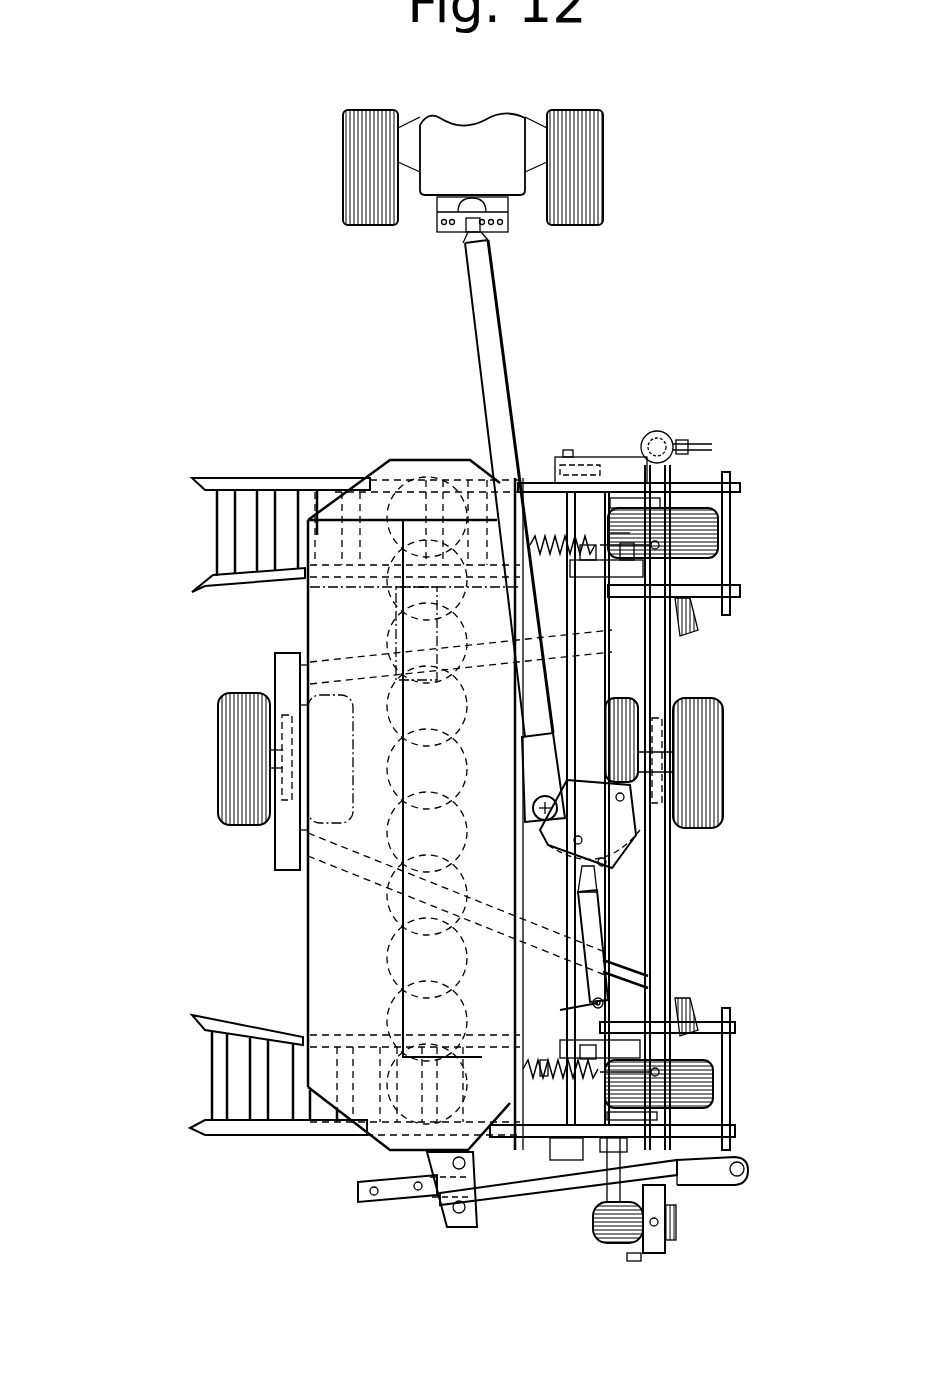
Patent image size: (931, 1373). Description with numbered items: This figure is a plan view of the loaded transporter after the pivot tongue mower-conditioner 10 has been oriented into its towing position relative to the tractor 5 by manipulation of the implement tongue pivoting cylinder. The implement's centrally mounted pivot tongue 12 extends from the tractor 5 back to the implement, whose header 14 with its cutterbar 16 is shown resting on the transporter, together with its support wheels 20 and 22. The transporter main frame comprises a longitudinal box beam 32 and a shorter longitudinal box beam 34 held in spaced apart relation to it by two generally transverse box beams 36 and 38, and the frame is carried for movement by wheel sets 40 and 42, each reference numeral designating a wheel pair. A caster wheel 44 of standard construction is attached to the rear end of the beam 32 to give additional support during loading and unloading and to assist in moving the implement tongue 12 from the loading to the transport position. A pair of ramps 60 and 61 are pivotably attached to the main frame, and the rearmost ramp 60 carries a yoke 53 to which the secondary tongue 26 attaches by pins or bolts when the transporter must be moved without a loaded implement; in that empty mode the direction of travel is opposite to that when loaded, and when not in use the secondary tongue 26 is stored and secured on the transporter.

The tractor 5 is at (473, 128).
The pivot tongue mower-conditioner 10 is at (404, 418).
The pivot tongue 12 is at (492, 378).
The header 14 is at (325, 982).
The cutterbar 16 is at (385, 950).
The support wheel 20 is at (716, 1090).
The support wheel 22 is at (716, 530).
The secondary tongue 26 is at (503, 1188).
The longitudinal box beam 32 is at (658, 650).
The shorter longitudinal box beam 34 is at (285, 668).
The transverse box beam 36 is at (632, 967).
The transverse box beam 38 is at (628, 640).
The wheel set 40 is at (228, 727).
The wheel set 42 is at (710, 752).
The caster wheel 44 is at (596, 1240).
The yoke 53 is at (450, 1218).
The ramp 60 is at (196, 1080).
The ramp 61 is at (196, 548).